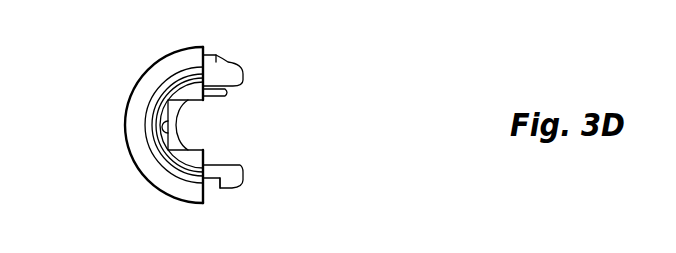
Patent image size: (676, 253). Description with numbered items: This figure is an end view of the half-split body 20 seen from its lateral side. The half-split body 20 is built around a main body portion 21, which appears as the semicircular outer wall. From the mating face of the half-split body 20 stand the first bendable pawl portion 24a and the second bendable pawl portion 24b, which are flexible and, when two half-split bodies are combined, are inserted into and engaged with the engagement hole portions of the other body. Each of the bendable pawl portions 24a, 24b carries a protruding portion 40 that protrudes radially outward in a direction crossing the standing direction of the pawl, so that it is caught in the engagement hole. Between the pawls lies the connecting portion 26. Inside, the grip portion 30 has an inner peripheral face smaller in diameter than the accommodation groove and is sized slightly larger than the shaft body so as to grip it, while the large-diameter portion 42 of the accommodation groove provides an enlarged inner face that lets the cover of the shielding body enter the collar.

The half-split body 20 is at (150, 229).
The main body portion 21 is at (130, 117).
The first bendable pawl portion 24a is at (238, 62).
The second bendable pawl portion 24b is at (243, 178).
The connecting portion 26 is at (229, 96).
The grip portion 30 is at (187, 113).
The protruding portion 40 is at (217, 62).
The large-diameter portion 42 is at (162, 128).